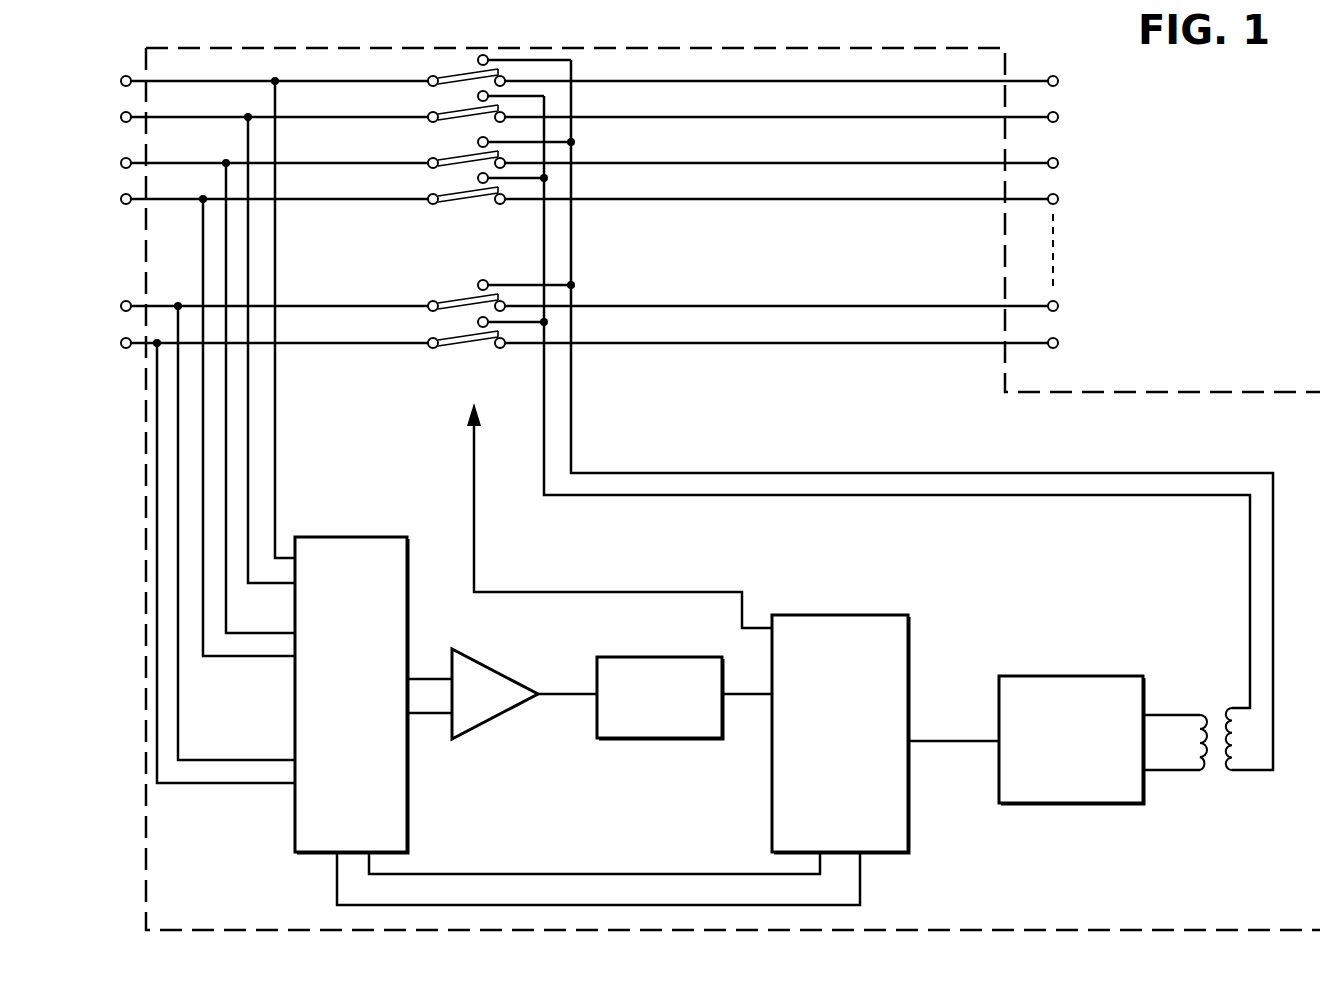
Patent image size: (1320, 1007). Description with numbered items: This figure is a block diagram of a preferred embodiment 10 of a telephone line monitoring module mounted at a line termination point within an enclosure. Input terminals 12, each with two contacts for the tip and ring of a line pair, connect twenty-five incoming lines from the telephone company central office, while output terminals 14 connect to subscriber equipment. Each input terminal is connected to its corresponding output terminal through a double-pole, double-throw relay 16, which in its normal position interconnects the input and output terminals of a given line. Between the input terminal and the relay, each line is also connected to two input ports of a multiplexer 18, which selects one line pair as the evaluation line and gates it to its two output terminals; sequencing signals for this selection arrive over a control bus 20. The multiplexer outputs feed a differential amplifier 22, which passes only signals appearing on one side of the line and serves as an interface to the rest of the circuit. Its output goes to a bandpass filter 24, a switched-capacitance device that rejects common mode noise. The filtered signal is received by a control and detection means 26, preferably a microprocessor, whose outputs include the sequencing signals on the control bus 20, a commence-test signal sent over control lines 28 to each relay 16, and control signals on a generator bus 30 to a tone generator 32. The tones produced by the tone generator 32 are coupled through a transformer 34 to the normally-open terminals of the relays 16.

The preferred embodiment 10 is at (1231, 370).
The input terminals 12 is at (89, 217).
The output terminals 14 is at (1089, 214).
The double-pole, double-throw relay 16 is at (432, 225).
The multiplexer 18 is at (382, 542).
The control bus 20 is at (595, 855).
The differential amplifier 22 is at (525, 700).
The bandpass filter 24 is at (637, 659).
The control and detection means 26 is at (858, 623).
The control lines 28 is at (703, 592).
The generator bus 30 is at (950, 742).
The tone generator 32 is at (1115, 680).
The transformer 34 is at (1210, 768).